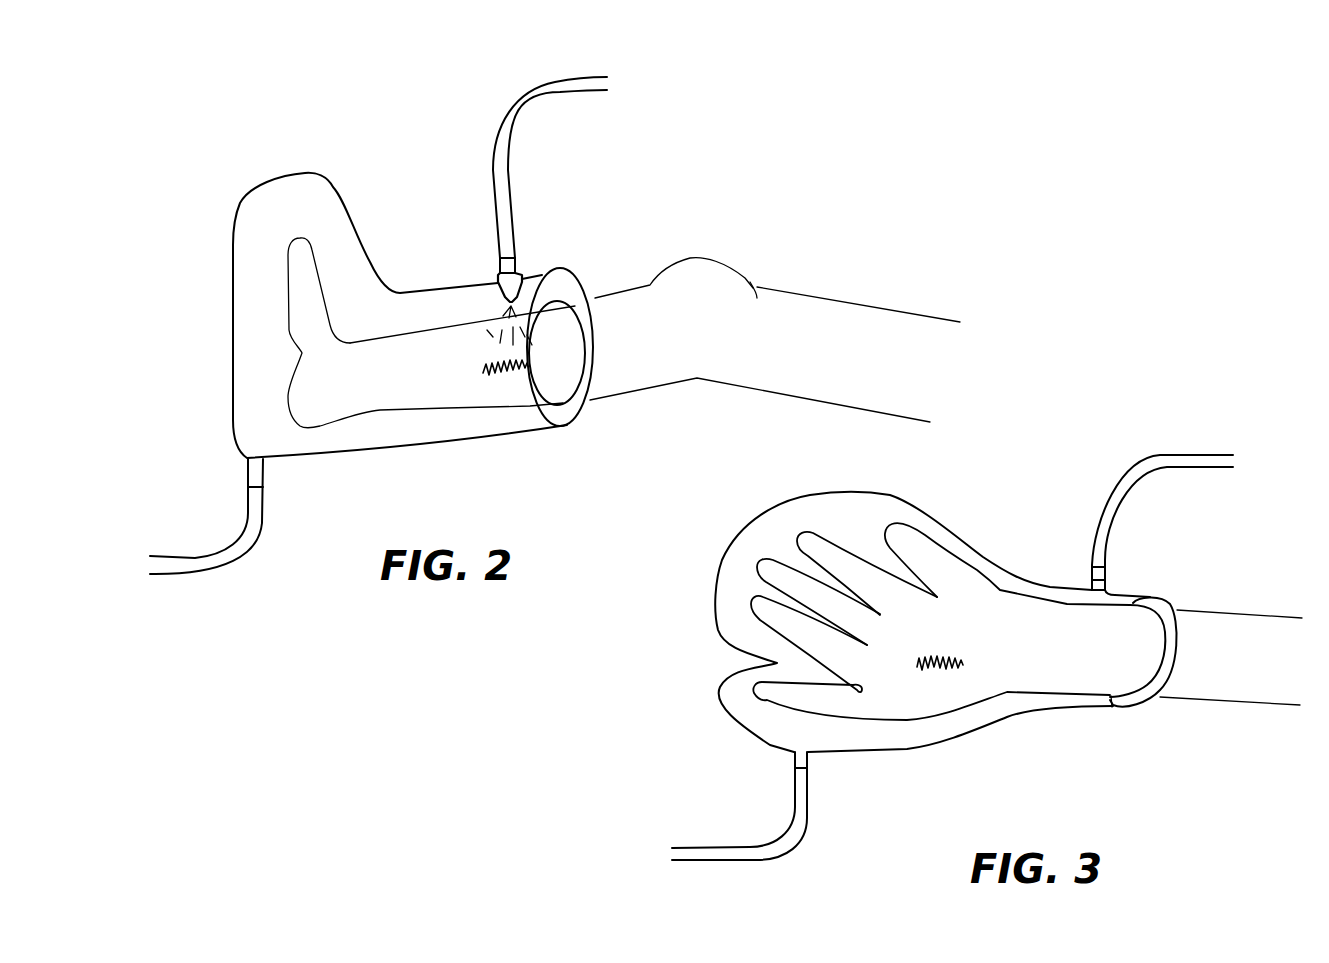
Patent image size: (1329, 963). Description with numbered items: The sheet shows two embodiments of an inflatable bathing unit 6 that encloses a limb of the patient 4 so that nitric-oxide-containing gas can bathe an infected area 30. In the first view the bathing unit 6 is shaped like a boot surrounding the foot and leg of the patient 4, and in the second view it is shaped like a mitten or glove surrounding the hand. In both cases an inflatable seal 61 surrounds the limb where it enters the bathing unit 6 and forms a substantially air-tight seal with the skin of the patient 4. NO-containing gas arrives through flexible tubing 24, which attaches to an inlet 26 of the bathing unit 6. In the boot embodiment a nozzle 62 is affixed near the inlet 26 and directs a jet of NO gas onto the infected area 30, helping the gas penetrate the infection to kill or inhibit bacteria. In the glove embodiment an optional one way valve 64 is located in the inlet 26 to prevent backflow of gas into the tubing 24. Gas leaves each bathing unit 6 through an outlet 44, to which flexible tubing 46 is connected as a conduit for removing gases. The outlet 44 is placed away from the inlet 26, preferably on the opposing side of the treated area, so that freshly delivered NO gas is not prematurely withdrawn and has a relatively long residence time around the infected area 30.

In FIG. 2, the patient 4 is at (822, 310).
In FIG. 3, the patient 4 is at (1235, 695).
In FIG. 2, the bathing unit 6 is at (322, 175).
In FIG. 3, the bathing unit 6 is at (817, 495).
In FIG. 2, the flexible tubing 24 is at (507, 150).
In FIG. 3, the flexible tubing 24 is at (1192, 455).
In FIG. 2, the inlet 26 is at (498, 266).
In FIG. 3, the inlet 26 is at (1090, 573).
In FIG. 2, the infected area 30 is at (487, 365).
In FIG. 3, the infected area 30 is at (943, 656).
In FIG. 2, the outlet 44 is at (248, 472).
In FIG. 3, the outlet 44 is at (808, 758).
In FIG. 2, the flexible tubing 46 is at (258, 540).
In FIG. 3, the flexible tubing 46 is at (740, 855).
In FIG. 2, the inflatable seal 61 is at (573, 280).
In FIG. 3, the inflatable seal 61 is at (1162, 602).
In FIG. 2, the nozzle 62 is at (503, 296).
In FIG. 3, the one way valve 64 is at (1104, 585).